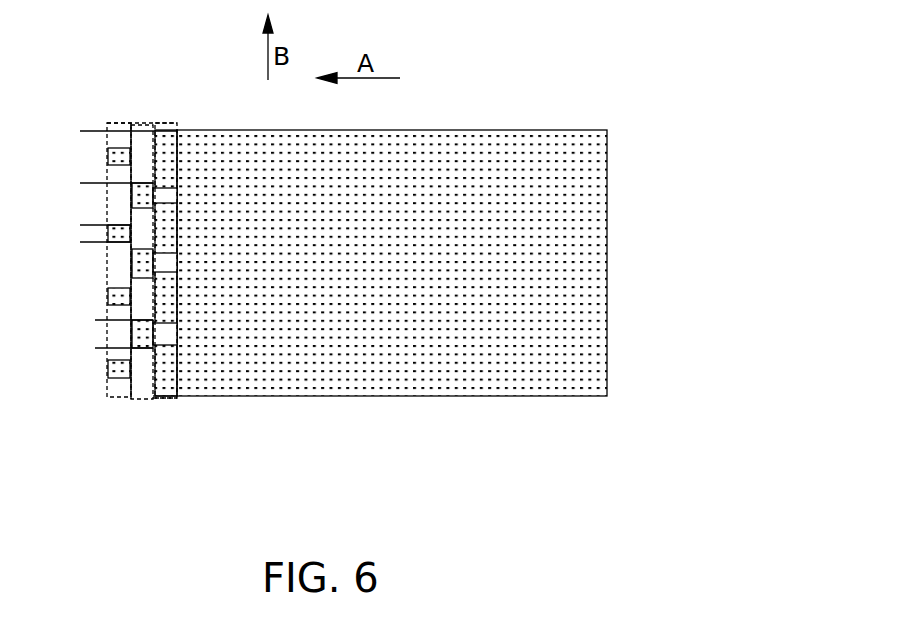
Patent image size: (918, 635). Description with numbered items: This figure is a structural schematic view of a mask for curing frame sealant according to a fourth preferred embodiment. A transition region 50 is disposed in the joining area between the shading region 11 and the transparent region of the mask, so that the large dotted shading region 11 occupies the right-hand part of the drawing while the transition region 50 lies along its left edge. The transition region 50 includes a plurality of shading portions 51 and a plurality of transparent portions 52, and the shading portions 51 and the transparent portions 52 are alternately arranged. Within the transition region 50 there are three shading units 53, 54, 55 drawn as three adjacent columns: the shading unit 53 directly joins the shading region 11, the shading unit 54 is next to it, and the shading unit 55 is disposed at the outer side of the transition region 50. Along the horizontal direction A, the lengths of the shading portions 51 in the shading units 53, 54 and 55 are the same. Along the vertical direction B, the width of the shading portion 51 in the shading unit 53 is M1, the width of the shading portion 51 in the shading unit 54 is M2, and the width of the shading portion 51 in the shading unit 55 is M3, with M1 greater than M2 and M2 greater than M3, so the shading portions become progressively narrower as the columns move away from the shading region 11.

The shading region 11 is at (480, 155).
The transition region 50 is at (125, 105).
The shading portions 51 is at (181, 130).
The transparent portions 52 is at (176, 180).
The shading unit 53 is at (172, 418).
The shading unit 54 is at (140, 417).
The shading unit 55 is at (107, 410).
The width of the shading portion in the shading unit 53 M1 is at (90, 143).
The width of the shading portion in the shading unit 54 M2 is at (98, 290).
The width of the shading portion in the shading unit 55 M3 is at (83, 193).